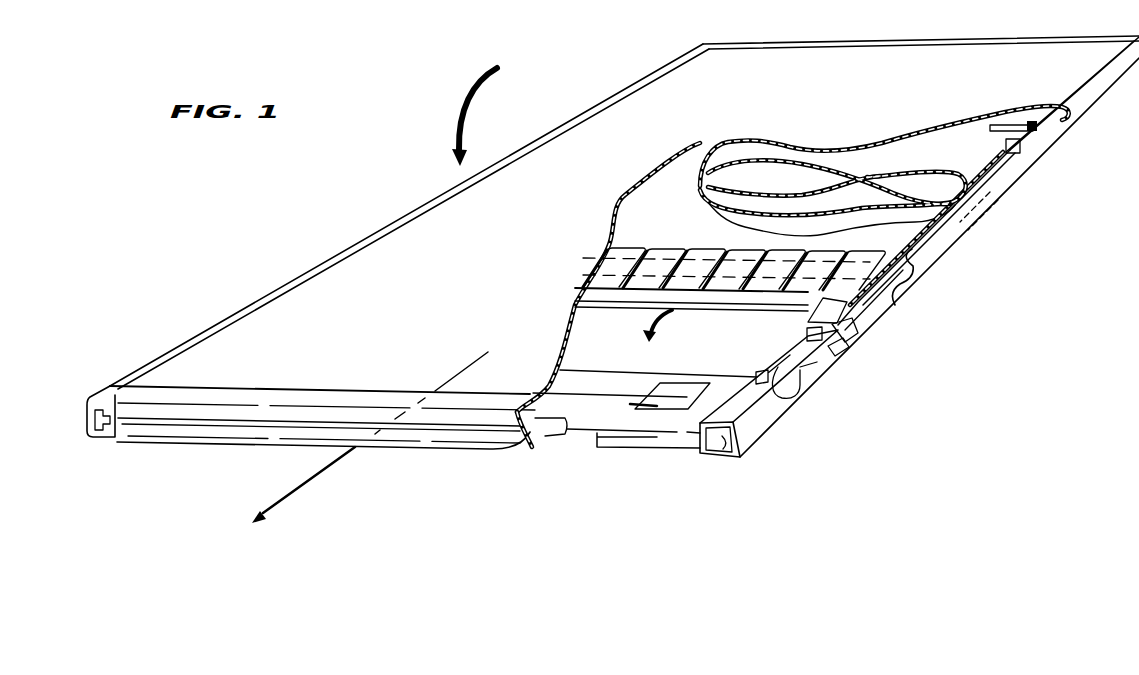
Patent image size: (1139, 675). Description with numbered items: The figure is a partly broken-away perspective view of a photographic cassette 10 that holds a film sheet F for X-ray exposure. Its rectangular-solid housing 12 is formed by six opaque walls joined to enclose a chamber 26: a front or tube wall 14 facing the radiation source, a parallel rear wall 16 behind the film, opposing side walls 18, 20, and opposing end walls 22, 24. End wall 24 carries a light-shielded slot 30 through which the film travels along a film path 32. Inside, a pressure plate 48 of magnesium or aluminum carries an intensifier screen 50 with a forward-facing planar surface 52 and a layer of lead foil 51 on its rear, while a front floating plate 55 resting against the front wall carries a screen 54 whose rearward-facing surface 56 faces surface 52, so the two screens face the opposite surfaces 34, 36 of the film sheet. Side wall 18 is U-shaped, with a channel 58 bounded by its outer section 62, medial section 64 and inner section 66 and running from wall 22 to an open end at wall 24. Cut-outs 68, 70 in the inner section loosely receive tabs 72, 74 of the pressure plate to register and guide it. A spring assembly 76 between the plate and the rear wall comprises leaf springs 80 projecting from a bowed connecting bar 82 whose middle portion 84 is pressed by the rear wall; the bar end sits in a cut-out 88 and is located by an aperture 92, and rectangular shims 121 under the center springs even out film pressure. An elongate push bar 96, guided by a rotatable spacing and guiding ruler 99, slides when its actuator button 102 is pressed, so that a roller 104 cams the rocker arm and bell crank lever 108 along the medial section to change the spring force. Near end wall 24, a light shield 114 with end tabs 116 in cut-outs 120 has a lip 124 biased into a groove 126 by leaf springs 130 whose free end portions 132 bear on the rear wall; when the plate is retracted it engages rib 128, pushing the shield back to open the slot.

The photographic cassette 10 is at (488, 112).
The housing 12 is at (610, 100).
The front wall 14 is at (894, 228).
The rear wall 16 is at (423, 328).
The side wall 18 is at (1080, 121).
The side wall 20 is at (352, 254).
The end wall 22 is at (885, 43).
The end wall 24 is at (613, 452).
The chamber 26 is at (568, 326).
The slot 30 is at (173, 418).
The film path 32 is at (293, 503).
The film sheet surface 34 is at (757, 183).
The film sheet surface 36 is at (805, 180).
The pressure plate 48 is at (710, 165).
The intensifier screen 50 is at (730, 168).
The layer of lead foil 51 is at (673, 213).
The planar surface 52 is at (700, 197).
The screen 54 is at (855, 192).
The front floating plate 55 is at (903, 200).
The planar surface 56 is at (877, 195).
The channel 58 is at (101, 433).
The outer section 62 is at (196, 337).
The medial section 64 is at (803, 385).
The inner section 66 is at (893, 288).
The cut-out 68 is at (807, 335).
The cut-out 70 is at (1020, 149).
The tab 72 is at (817, 382).
The tab 74 is at (1048, 189).
The spring assembly 76 is at (664, 330).
The leaf springs 80 is at (762, 252).
The connecting bar 82 is at (995, 124).
The middle portion 84 is at (738, 298).
The cut-out 88 is at (801, 280).
The aperture 92 is at (827, 307).
The push bar 96 is at (876, 287).
The spacing and guiding ruler 99 is at (983, 222).
The actuator button 102 is at (104, 433).
The roller 104 is at (850, 341).
The bell crank lever 108 is at (838, 354).
The light shield 114 is at (607, 386).
The tab 116 is at (759, 375).
The cut-out 120 is at (773, 382).
The shims 121 is at (658, 290).
The lip 124 is at (568, 430).
The groove 126 is at (472, 455).
The rib 128 is at (630, 403).
The leaf springs 130 is at (706, 404).
The free end portion 132 is at (657, 410).
The film sheet F is at (783, 180).